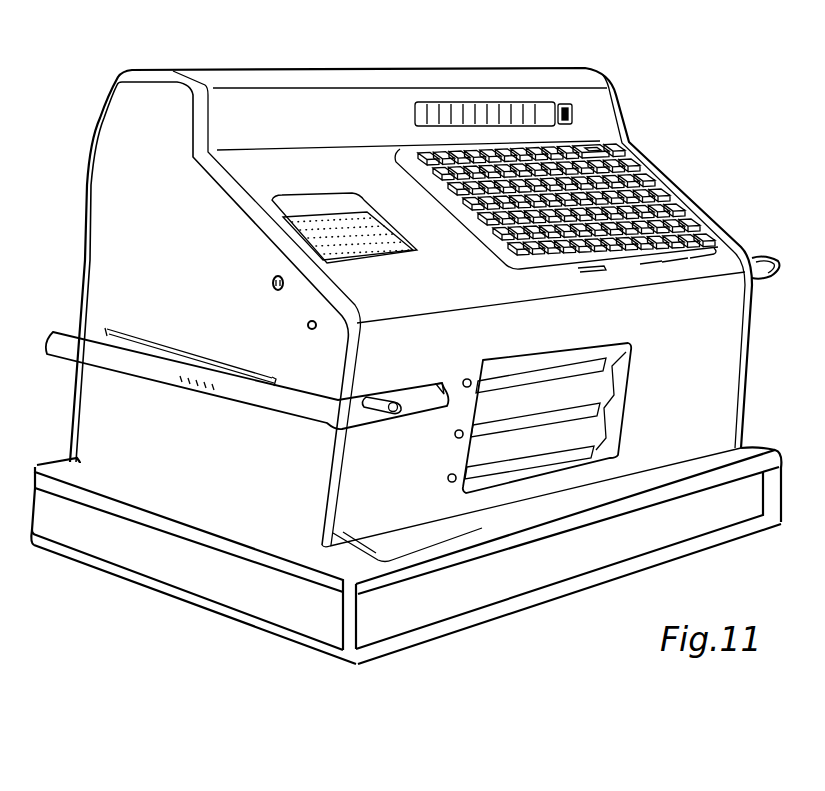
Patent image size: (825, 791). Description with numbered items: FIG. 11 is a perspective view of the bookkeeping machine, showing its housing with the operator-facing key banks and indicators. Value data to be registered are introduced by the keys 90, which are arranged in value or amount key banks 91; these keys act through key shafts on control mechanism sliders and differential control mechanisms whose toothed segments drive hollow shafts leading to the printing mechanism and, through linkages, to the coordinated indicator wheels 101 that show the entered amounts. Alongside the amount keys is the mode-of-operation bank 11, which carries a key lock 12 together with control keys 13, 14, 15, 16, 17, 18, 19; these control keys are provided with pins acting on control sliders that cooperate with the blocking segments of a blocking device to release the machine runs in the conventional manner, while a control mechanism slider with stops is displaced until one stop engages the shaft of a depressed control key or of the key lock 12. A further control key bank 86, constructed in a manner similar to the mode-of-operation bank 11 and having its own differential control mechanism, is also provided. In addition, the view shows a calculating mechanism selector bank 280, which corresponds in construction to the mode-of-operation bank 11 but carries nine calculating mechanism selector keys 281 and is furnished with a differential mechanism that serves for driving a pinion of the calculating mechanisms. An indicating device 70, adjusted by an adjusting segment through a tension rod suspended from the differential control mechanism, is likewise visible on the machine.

The indicator wheels 101 is at (440, 102).
The keys 90 is at (487, 150).
The indicating device 70 is at (570, 103).
The calculating mechanism selector keys 281 is at (586, 146).
The key lock 12 is at (606, 146).
The control key 19 is at (624, 156).
The control key 18 is at (638, 170).
The control key 17 is at (653, 186).
The control key 16 is at (668, 200).
The control key 15 is at (683, 214).
The control key 14 is at (697, 227).
The control key 13 is at (712, 240).
The amount key banks 91 is at (600, 266).
The calculating mechanism selector bank 280 is at (655, 250).
The mode-of-operation bank 11 is at (676, 254).
The control key bank 86 is at (697, 254).